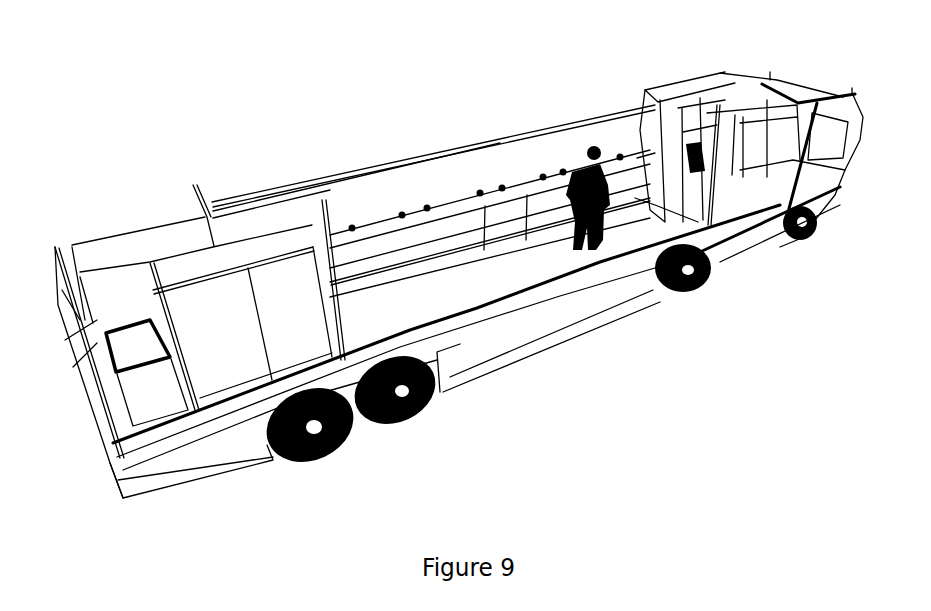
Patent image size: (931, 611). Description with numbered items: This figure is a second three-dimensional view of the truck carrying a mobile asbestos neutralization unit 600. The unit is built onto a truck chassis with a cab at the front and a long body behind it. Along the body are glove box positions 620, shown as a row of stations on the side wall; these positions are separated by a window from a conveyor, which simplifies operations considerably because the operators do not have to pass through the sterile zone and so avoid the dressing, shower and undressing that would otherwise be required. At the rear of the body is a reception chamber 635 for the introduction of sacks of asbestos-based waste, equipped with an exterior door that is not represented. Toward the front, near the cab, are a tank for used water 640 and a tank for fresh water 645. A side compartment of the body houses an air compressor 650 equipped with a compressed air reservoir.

The mobile asbestos neutralization unit 600 is at (388, 106).
The glove box positions 620 is at (398, 215).
The reception chamber 635 is at (113, 317).
The tank for used water 640 is at (755, 155).
The tank for fresh water 645 is at (733, 183).
The air compressor 650 is at (247, 368).